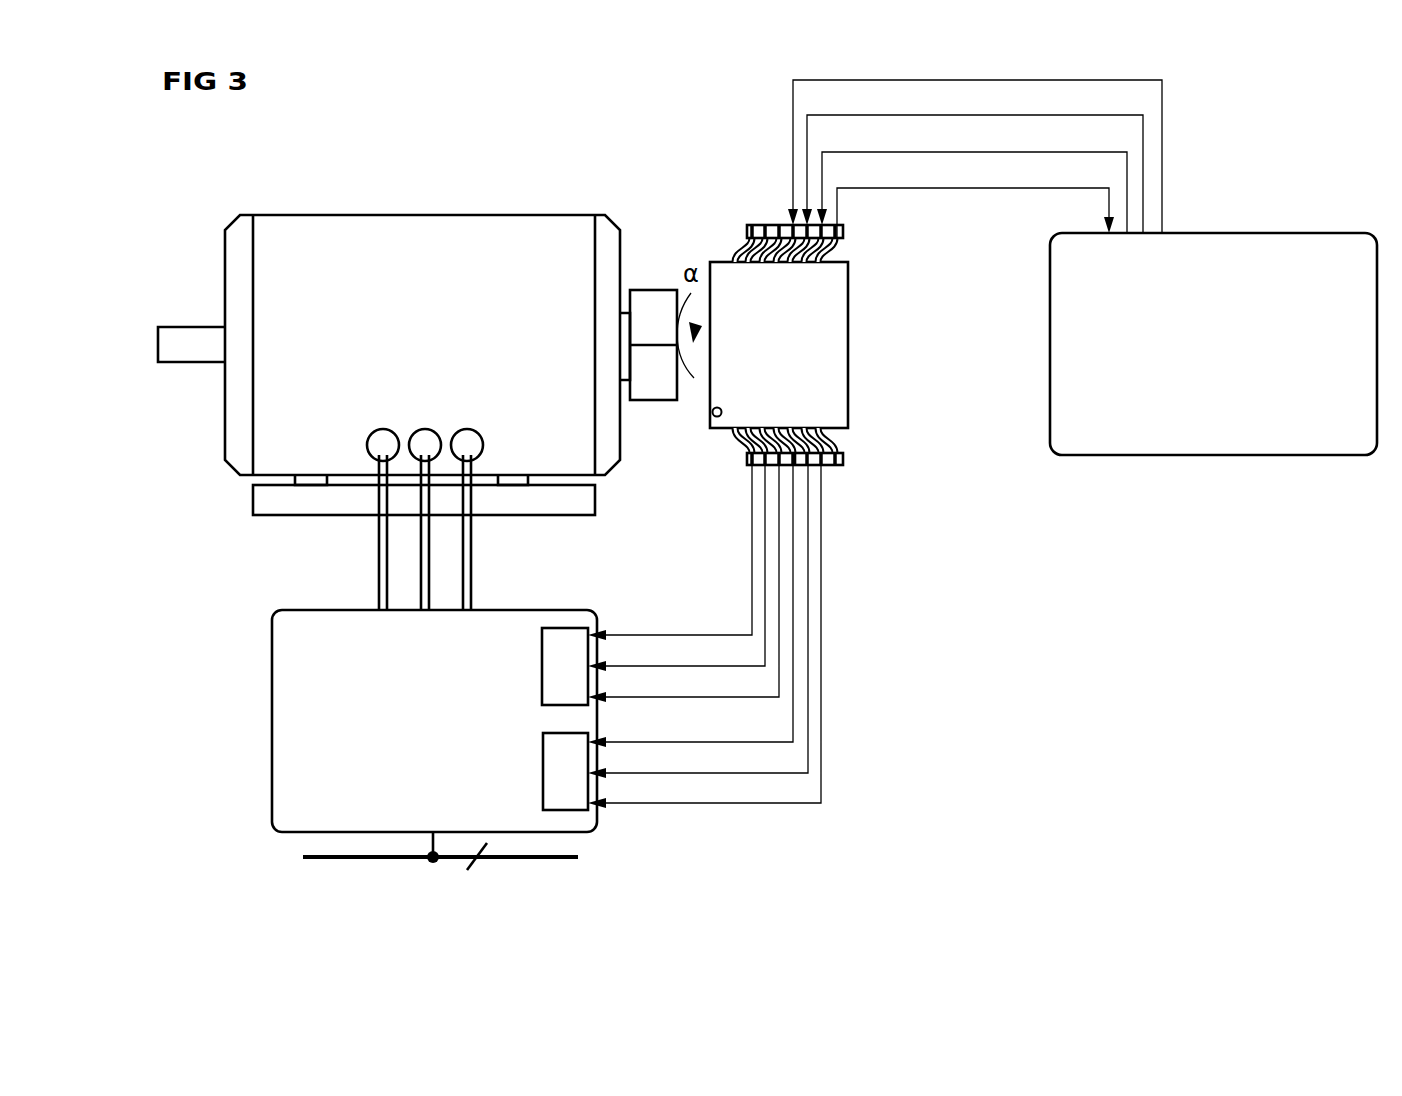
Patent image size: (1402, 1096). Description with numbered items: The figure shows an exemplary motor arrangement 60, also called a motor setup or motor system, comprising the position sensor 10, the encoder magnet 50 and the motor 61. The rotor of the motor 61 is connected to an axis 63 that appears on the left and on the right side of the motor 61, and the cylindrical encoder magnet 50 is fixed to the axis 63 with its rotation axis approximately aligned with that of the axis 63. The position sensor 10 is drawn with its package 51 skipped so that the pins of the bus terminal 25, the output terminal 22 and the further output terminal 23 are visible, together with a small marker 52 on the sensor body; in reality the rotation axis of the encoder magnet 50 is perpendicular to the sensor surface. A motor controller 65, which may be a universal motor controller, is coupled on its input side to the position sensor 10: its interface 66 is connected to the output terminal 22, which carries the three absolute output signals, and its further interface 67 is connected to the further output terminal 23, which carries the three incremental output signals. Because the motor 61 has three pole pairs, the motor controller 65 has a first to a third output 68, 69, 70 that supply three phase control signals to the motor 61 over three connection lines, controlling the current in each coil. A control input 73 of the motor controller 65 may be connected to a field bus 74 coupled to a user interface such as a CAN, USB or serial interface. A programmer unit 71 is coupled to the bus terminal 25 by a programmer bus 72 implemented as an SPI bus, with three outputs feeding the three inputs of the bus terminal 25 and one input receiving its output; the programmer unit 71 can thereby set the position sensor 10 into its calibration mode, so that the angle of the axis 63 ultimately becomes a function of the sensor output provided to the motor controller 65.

The position sensor 10 is at (797, 331).
The output terminal 22 is at (727, 473).
The further output terminal 23 is at (853, 477).
The bus terminal 25 is at (768, 192).
The encoder magnet 50 is at (653, 290).
The package 51 is at (848, 346).
The sensor element 52 is at (712, 413).
The motor arrangement 60 is at (1097, 642).
The motor 61 is at (425, 215).
The axis 63 is at (187, 340).
The motor controller 65 is at (562, 610).
The interface 66 is at (542, 675).
The further interface 67 is at (543, 769).
The first output 68 is at (382, 620).
The second output 69 is at (424, 620).
The third output 70 is at (466, 620).
The programmer unit 71 is at (1227, 233).
The programmer bus 72 is at (1184, 106).
The control input 73 is at (433, 832).
The field bus 74 is at (350, 860).